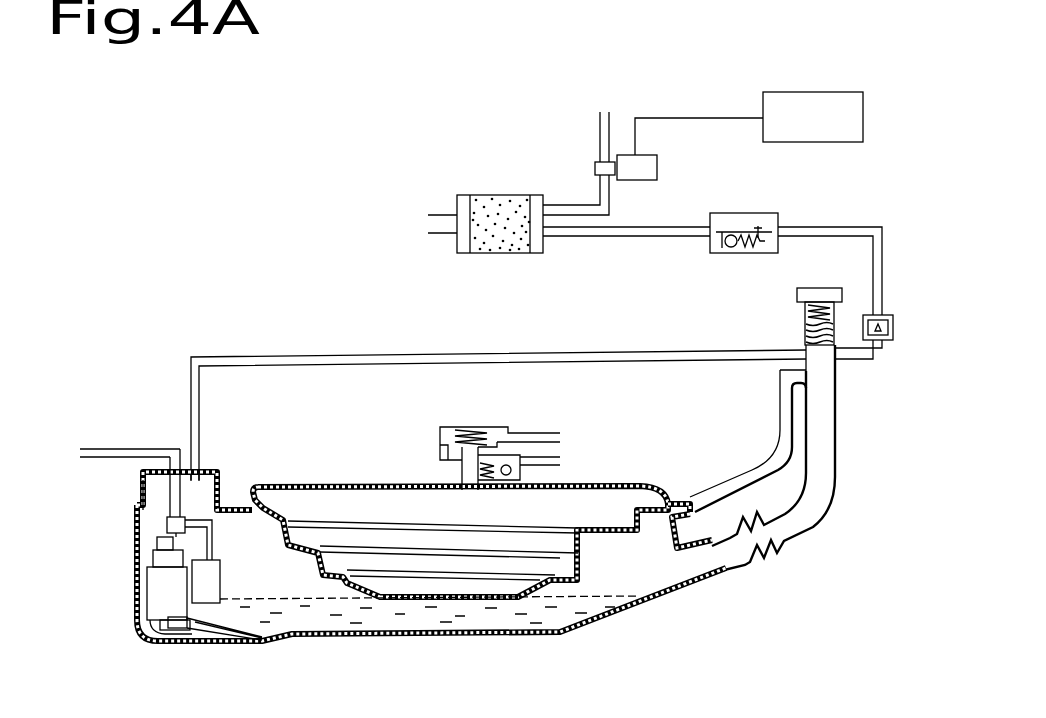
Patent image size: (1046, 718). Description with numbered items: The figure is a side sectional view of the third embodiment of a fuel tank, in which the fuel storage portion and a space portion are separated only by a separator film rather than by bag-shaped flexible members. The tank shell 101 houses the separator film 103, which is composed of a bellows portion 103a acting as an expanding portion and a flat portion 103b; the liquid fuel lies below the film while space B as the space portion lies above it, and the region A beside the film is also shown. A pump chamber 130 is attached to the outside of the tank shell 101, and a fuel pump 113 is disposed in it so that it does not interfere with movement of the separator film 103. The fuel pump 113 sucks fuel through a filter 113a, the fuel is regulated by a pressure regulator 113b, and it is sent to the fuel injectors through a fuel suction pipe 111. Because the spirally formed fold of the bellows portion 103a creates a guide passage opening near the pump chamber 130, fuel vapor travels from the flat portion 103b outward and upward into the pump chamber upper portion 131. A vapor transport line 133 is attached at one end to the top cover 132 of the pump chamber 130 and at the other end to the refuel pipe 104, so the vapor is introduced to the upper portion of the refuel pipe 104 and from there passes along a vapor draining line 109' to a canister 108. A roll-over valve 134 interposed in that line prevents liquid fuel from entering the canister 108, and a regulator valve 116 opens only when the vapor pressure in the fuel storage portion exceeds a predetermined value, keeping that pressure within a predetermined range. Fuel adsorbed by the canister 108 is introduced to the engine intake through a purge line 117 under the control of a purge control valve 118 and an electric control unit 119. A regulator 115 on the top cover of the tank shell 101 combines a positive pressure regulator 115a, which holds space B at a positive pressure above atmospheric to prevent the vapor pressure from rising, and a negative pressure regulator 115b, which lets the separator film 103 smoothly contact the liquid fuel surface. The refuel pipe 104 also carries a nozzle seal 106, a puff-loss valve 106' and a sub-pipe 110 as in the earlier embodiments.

The tank shell 101 is at (416, 638).
The separator film 103 is at (290, 512).
The bellows portion 103a is at (605, 537).
The flat portion 103b is at (475, 600).
The refuel pipe 104 is at (837, 462).
The nozzle seal 106 is at (780, 316).
The puff-loss valve 106' is at (857, 394).
The canister 108 is at (497, 195).
The vapor pipe 109' is at (830, 262).
The sub-pipe 110 is at (780, 412).
The fuel suction pipe 111 is at (105, 450).
The fuel pump 113 is at (162, 598).
The filter 113a is at (212, 647).
The pressure regulator 113b is at (238, 602).
The regulator 115 is at (502, 418).
The positive pressure regulator 115a is at (447, 468).
The negative pressure regulator 115b is at (510, 470).
The regulator valve 116 is at (725, 260).
The purge line 117 is at (600, 125).
The purge control valve 118 is at (657, 168).
The electric control unit 119 is at (772, 107).
The pump chamber 130 is at (152, 523).
The pump chamber upper portion 131 is at (160, 466).
The top cover 132 is at (200, 468).
The vapor transport line 133 is at (278, 356).
The roll-over valve 134 is at (878, 316).
The outer space A is at (670, 567).
The space B is at (392, 513).